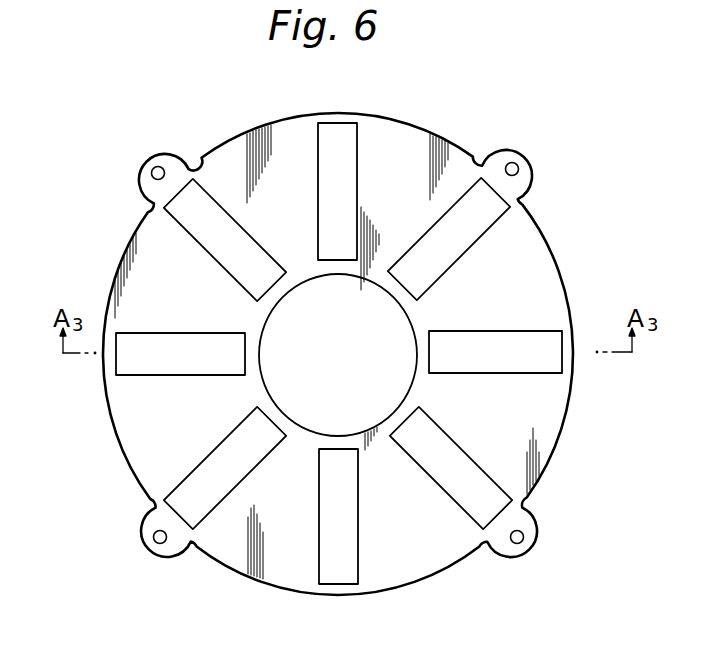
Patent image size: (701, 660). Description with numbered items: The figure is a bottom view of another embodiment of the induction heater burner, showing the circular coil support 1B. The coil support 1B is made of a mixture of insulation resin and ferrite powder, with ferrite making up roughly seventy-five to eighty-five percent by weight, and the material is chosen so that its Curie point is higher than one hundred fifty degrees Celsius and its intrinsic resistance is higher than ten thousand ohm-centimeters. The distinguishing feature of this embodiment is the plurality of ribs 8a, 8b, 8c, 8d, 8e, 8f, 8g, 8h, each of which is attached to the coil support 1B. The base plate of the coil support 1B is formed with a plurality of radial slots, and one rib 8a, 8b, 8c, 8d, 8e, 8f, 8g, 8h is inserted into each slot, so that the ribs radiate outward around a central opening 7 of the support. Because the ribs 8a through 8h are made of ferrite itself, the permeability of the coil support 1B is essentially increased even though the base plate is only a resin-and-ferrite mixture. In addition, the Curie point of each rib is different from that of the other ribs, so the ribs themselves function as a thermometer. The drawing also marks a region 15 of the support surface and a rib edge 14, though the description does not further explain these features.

The coil support 1B is at (545, 296).
The central opening 7 is at (350, 354).
The rib 8a is at (346, 143).
The rib 8b is at (490, 212).
The rib 8c is at (543, 365).
The rib 8d is at (498, 494).
The rib 8e is at (353, 547).
The rib 8f is at (187, 494).
The rib 8g is at (136, 360).
The rib 8h is at (181, 221).
The slot edge 14 is at (322, 543).
The disc surface region 15 is at (172, 402).